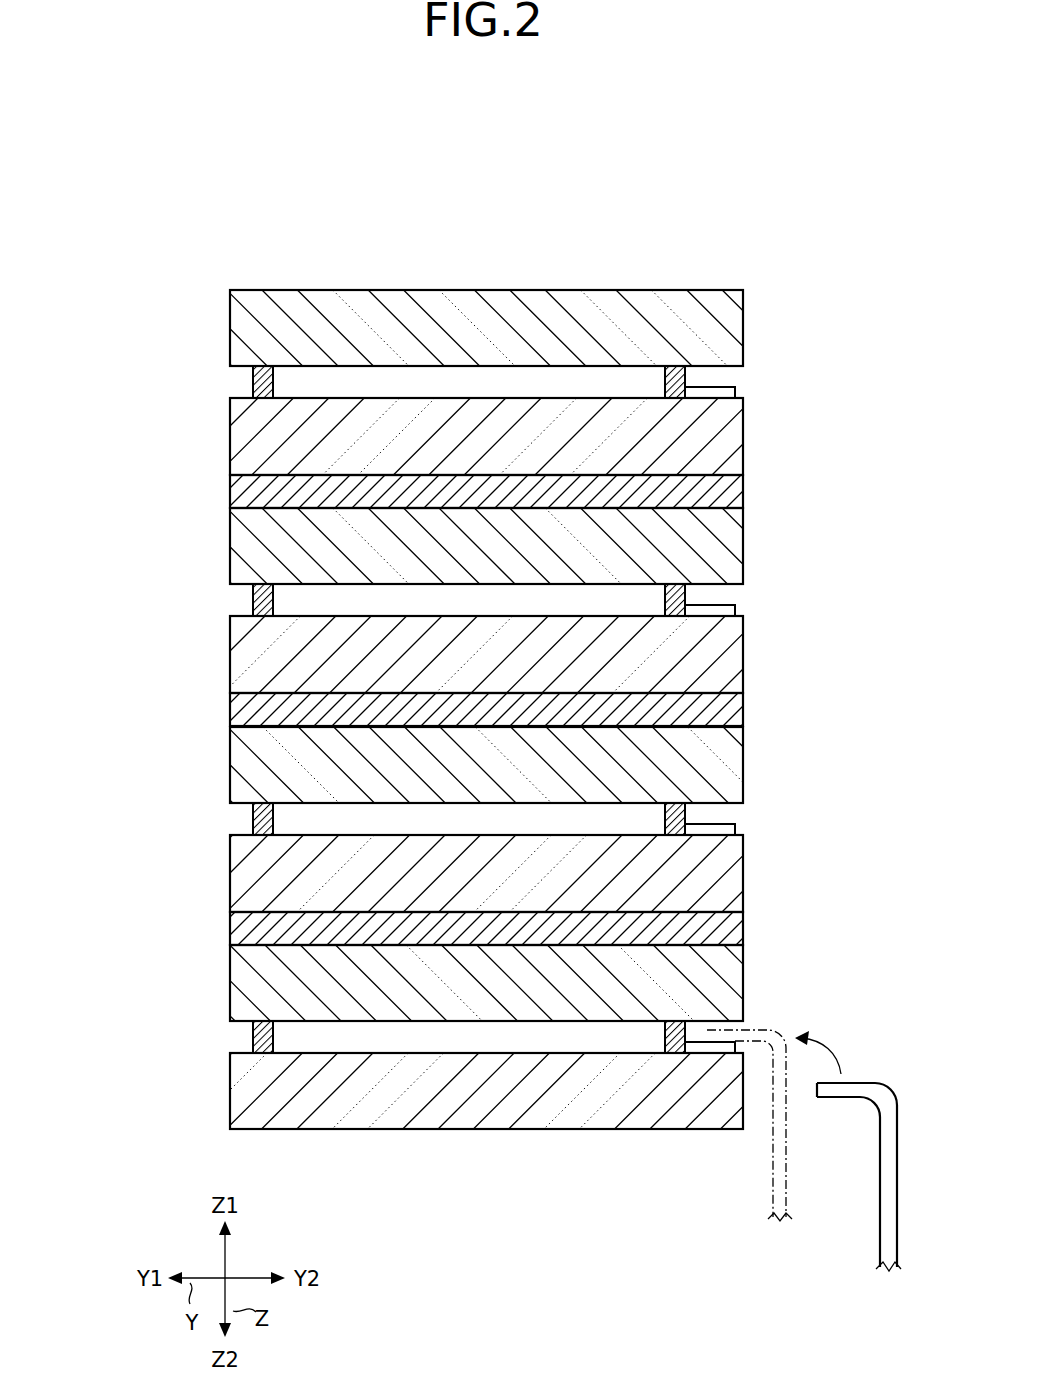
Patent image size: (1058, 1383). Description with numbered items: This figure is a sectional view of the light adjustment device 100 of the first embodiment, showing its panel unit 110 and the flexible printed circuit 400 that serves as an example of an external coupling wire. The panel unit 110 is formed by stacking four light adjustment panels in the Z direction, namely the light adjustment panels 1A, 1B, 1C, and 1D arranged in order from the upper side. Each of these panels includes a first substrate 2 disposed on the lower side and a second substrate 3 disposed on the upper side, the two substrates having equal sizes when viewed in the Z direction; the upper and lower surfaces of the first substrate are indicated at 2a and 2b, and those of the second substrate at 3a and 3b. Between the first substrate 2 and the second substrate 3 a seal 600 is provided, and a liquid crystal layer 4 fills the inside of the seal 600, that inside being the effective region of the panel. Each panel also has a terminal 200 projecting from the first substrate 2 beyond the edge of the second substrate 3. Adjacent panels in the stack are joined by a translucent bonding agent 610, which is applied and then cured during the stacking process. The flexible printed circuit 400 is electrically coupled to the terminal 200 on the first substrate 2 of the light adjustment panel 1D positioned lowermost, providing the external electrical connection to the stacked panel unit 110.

The light adjustment device 100 is at (727, 150).
The panel unit 110 is at (115, 365).
The light adjustment panel 1A is at (218, 287).
The light adjustment panel 1B is at (218, 505).
The light adjustment panel 1C is at (218, 723).
The light adjustment panel 1D is at (218, 941).
The first substrate 2 is at (710, 438).
The upper surface of positive electrode layer 2a is at (550, 398).
The lower surface of positive electrode layer 2b is at (618, 473).
The second substrate 3 is at (493, 327).
The lower surface of negative electrode layer 3a is at (447, 364).
The upper surface of negative electrode layer 3b is at (365, 291).
The liquid crystal layer 4 is at (307, 385).
The seal 600 is at (675, 385).
The translucent bonding agent 610 is at (262, 492).
The terminal 200 is at (736, 392).
The flexible printed circuit 400 is at (857, 1103).